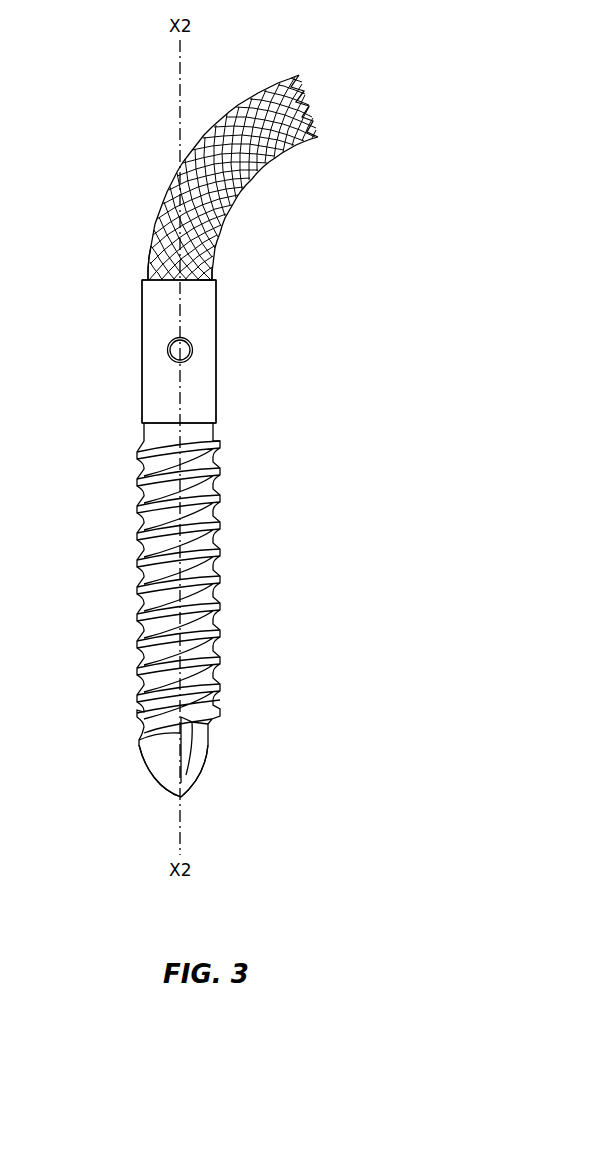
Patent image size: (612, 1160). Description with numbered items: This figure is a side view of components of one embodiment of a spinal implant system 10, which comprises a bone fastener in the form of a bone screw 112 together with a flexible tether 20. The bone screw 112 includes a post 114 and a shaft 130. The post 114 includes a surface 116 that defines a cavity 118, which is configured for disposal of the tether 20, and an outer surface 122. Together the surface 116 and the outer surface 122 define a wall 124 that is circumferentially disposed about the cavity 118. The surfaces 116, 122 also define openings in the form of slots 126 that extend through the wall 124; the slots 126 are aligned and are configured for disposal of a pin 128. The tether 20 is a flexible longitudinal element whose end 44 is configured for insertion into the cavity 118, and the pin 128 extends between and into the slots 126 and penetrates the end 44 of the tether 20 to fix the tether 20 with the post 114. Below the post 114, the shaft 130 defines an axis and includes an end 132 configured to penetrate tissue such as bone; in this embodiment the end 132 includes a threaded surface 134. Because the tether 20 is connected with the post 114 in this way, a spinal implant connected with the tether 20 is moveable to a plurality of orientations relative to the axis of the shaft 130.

The spinal implant system 10 is at (518, 175).
The tether 20 is at (292, 160).
The end 44 is at (214, 262).
The bone screw 112 is at (276, 521).
The post 114 is at (203, 313).
The surface 116 is at (140, 278).
The cavity 118 is at (140, 256).
The outer surface 122 is at (163, 393).
The wall 124 is at (217, 287).
The slots 126 is at (168, 343).
The pin 128 is at (194, 352).
The shaft 130 is at (163, 658).
The end 132 is at (155, 725).
The threaded surface 134 is at (216, 612).